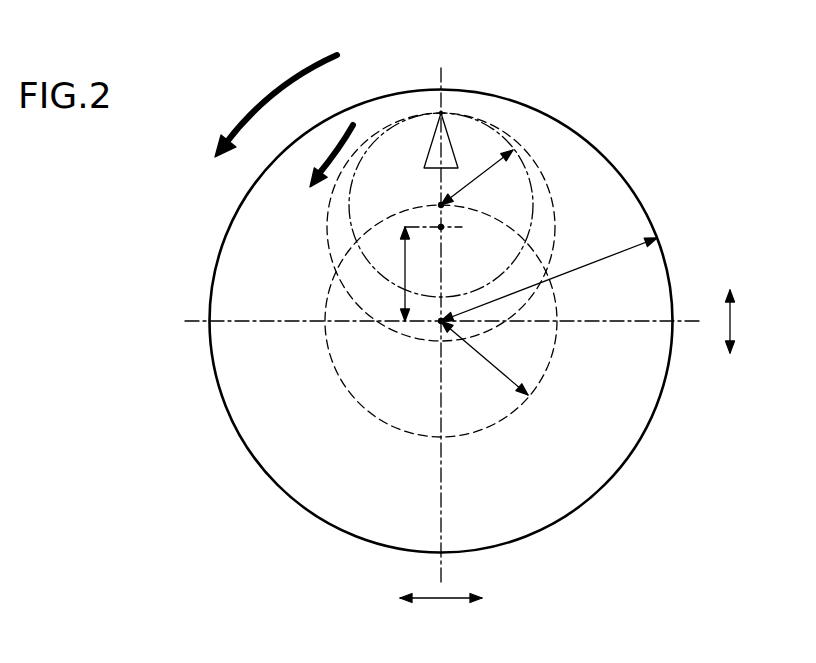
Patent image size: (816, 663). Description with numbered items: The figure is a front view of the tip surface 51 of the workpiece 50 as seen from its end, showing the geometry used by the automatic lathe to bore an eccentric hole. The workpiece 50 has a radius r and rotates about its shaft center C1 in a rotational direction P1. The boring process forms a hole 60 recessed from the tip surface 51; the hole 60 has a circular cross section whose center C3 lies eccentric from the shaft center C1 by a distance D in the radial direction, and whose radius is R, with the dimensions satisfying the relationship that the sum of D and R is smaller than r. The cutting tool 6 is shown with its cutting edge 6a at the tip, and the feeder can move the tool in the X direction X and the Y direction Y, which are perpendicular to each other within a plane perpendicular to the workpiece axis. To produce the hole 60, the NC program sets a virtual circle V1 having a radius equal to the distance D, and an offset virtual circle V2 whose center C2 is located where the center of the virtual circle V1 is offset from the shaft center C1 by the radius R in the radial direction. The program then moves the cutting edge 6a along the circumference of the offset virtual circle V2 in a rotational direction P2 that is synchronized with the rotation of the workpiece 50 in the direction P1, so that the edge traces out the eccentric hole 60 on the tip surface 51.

The cutting tool 6 is at (430, 162).
The cutting edge 6a is at (441, 113).
The workpiece 50 is at (606, 153).
The tip surface 51 is at (637, 386).
The hole 60 is at (350, 222).
The shaft center C1 is at (441, 321).
The center of offset virtual circle C2 is at (441, 227).
The center of hole C3 is at (441, 205).
The radius of hole R is at (495, 162).
The radius of workpiece r is at (614, 262).
The distance of eccentricity D is at (510, 368).
The virtual circle V1 is at (486, 430).
The offset virtual circle V2 is at (556, 205).
The rotational direction of workpiece P1 is at (277, 92).
The rotational direction of cutting edge P2 is at (332, 151).
The X-direction X is at (441, 604).
The Y-direction Y is at (736, 321).